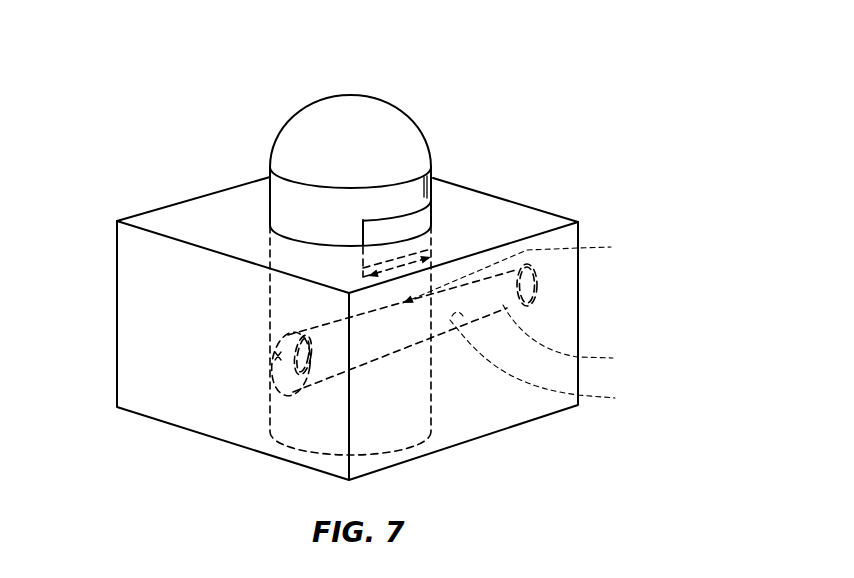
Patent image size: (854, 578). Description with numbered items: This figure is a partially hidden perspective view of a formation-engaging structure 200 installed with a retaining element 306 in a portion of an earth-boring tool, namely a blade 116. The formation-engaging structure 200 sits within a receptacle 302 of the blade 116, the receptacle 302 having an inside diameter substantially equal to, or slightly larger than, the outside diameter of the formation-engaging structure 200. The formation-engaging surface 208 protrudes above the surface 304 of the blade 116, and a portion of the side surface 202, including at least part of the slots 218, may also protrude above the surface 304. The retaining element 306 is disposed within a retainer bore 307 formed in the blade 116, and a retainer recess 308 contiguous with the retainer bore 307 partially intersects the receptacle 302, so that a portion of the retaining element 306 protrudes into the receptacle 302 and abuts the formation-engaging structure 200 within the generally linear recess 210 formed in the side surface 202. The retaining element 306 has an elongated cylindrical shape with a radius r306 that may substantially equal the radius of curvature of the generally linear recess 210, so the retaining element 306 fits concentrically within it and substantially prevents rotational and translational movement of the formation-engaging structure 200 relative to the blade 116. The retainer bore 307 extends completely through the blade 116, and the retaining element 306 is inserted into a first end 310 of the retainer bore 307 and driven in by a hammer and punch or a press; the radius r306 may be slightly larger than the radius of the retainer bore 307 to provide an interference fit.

The formation-engaging structure 200 is at (400, 151).
The side surface 202 is at (433, 180).
The formation-engaging surface 208 is at (300, 142).
The slots 218 is at (442, 213).
The receptacle 302 is at (305, 243).
The surface 304 is at (510, 223).
The generally linear recess 210 is at (526, 271).
The retainer recess 308 is at (282, 330).
The first end 310 is at (544, 293).
The retaining element 306 is at (469, 331).
The retainer bore 307 is at (551, 360).
The blade 116 is at (478, 410).
The radius of the retaining element r306 is at (278, 356).